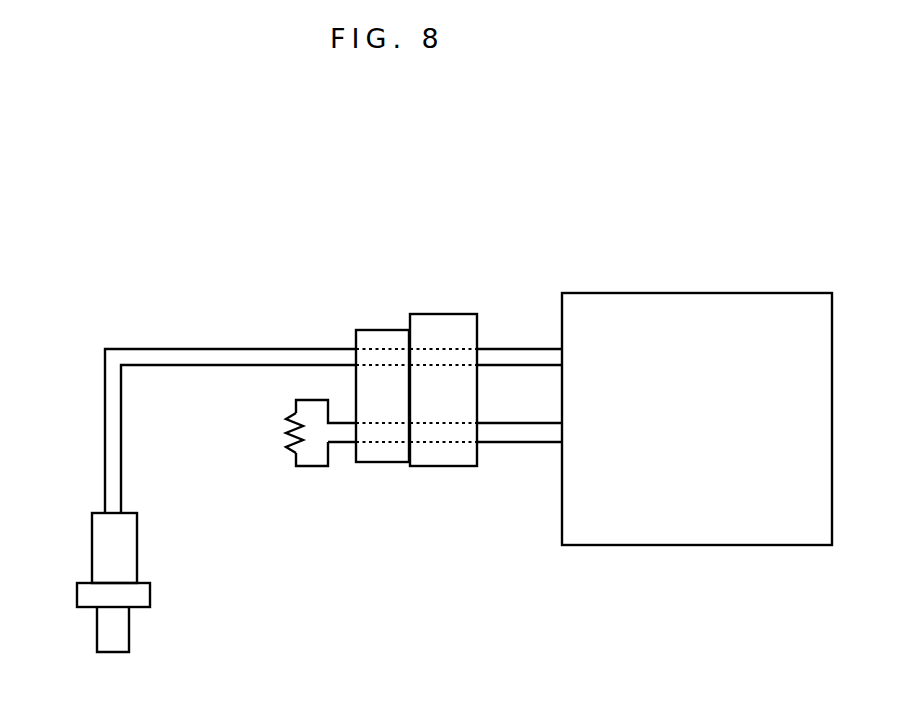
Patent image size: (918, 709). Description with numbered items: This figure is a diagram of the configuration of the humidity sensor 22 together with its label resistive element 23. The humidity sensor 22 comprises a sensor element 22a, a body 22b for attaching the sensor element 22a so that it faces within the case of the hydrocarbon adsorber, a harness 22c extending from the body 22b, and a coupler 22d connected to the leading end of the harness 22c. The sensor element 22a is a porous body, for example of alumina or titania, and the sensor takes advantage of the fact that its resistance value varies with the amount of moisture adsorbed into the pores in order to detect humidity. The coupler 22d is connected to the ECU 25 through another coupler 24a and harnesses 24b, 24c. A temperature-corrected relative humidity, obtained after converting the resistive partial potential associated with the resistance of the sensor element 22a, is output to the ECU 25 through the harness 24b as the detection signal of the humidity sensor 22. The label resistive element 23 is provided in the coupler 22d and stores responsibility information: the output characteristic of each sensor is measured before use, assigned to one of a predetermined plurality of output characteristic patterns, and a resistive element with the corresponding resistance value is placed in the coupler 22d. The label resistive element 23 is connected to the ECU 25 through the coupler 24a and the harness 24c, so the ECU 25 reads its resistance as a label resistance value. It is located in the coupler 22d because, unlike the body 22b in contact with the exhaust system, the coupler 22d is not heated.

The humidity sensor 22 is at (131, 565).
The sensor element 22a is at (123, 632).
The body 22b is at (103, 542).
The harness 22c is at (195, 357).
The coupler 22d is at (380, 328).
The label resistive element 23 is at (284, 429).
The coupler 24a is at (445, 313).
The harness 24b is at (507, 357).
The harness 24c is at (515, 433).
The ECU 25 is at (732, 293).